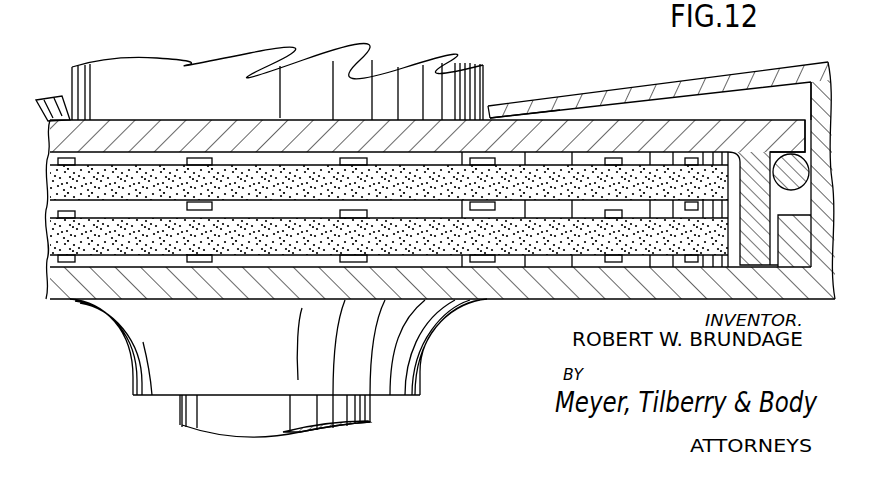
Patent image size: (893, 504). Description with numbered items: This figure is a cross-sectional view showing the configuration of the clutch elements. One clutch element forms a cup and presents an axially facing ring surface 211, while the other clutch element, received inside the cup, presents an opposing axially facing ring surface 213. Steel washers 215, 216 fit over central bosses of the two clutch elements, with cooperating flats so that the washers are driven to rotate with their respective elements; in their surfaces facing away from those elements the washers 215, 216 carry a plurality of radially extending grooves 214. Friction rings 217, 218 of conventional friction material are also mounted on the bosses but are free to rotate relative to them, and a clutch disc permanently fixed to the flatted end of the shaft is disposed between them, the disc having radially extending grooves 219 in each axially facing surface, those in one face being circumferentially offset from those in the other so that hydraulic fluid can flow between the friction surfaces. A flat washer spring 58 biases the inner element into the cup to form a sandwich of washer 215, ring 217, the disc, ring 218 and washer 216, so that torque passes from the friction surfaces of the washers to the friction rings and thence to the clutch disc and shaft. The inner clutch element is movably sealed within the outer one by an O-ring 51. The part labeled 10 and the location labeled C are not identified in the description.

The hub 10 is at (181, 423).
The axially facing ring surface 211 is at (168, 265).
The axially facing ring surface 213 is at (176, 152).
The radially extending grooves 214 is at (477, 158).
The steel washer 215 is at (582, 266).
The steel washer 216 is at (575, 157).
The friction ring 217 is at (297, 247).
The friction ring 218 is at (255, 175).
The radially extending grooves 219 is at (200, 210).
The O-ring 51 is at (795, 153).
The flat washer spring 58 is at (710, 76).
The clearance gap C is at (532, 79).